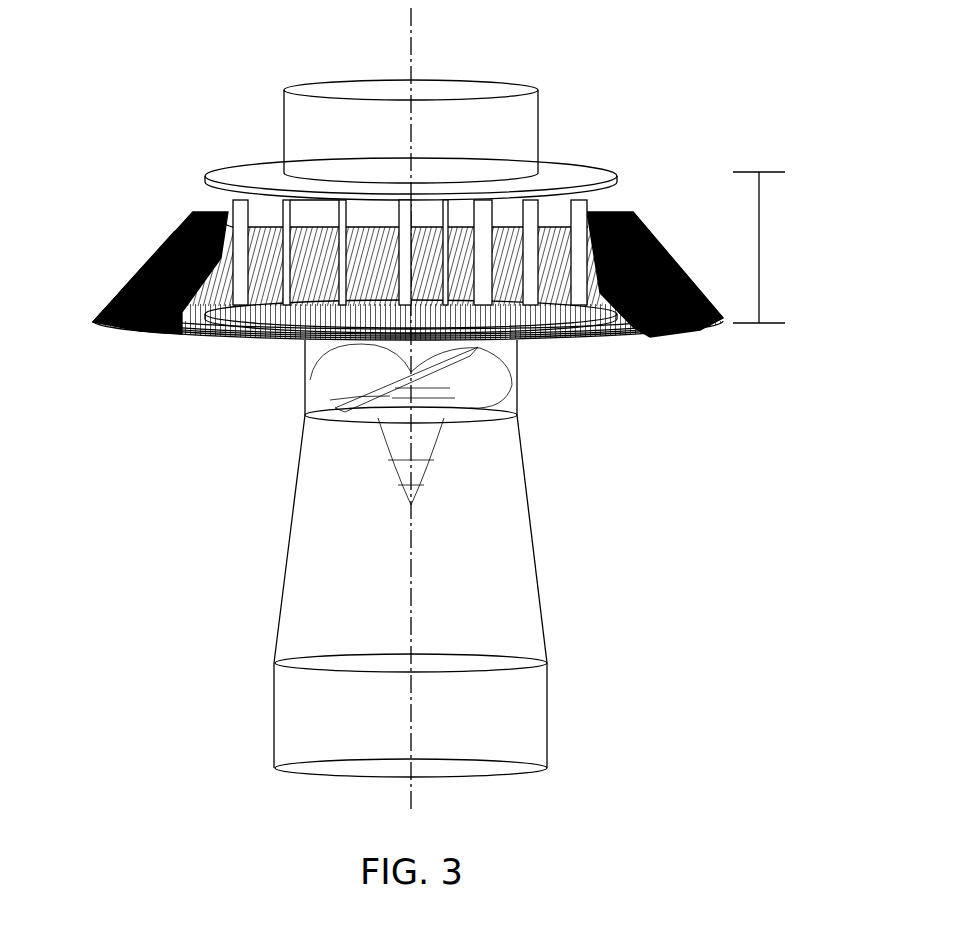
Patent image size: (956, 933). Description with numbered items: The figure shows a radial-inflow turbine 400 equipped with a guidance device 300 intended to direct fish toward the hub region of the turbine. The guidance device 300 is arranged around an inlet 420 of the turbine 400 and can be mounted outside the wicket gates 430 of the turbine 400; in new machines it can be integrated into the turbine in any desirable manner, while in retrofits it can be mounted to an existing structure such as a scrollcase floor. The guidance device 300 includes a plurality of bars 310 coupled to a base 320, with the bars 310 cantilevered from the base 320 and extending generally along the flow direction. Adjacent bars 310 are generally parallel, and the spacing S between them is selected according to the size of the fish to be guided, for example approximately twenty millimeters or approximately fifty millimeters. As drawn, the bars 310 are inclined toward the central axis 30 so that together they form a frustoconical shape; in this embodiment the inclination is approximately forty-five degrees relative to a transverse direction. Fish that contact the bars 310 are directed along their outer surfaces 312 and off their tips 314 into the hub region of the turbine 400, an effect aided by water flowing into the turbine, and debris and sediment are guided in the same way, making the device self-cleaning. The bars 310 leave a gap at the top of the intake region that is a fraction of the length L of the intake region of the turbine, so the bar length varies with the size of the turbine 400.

The central axis 30 is at (418, 60).
The guidance device 300 is at (135, 237).
The bars 310 is at (177, 337).
The outer surfaces 312 is at (398, 312).
The tips 314 is at (192, 212).
The base 320 is at (220, 337).
The radial-inflow turbine 400 is at (583, 543).
The inlet 420 is at (500, 217).
The wicket gates 430 is at (305, 215).
The spacing S is at (142, 335).
The length of the intake region L is at (761, 248).